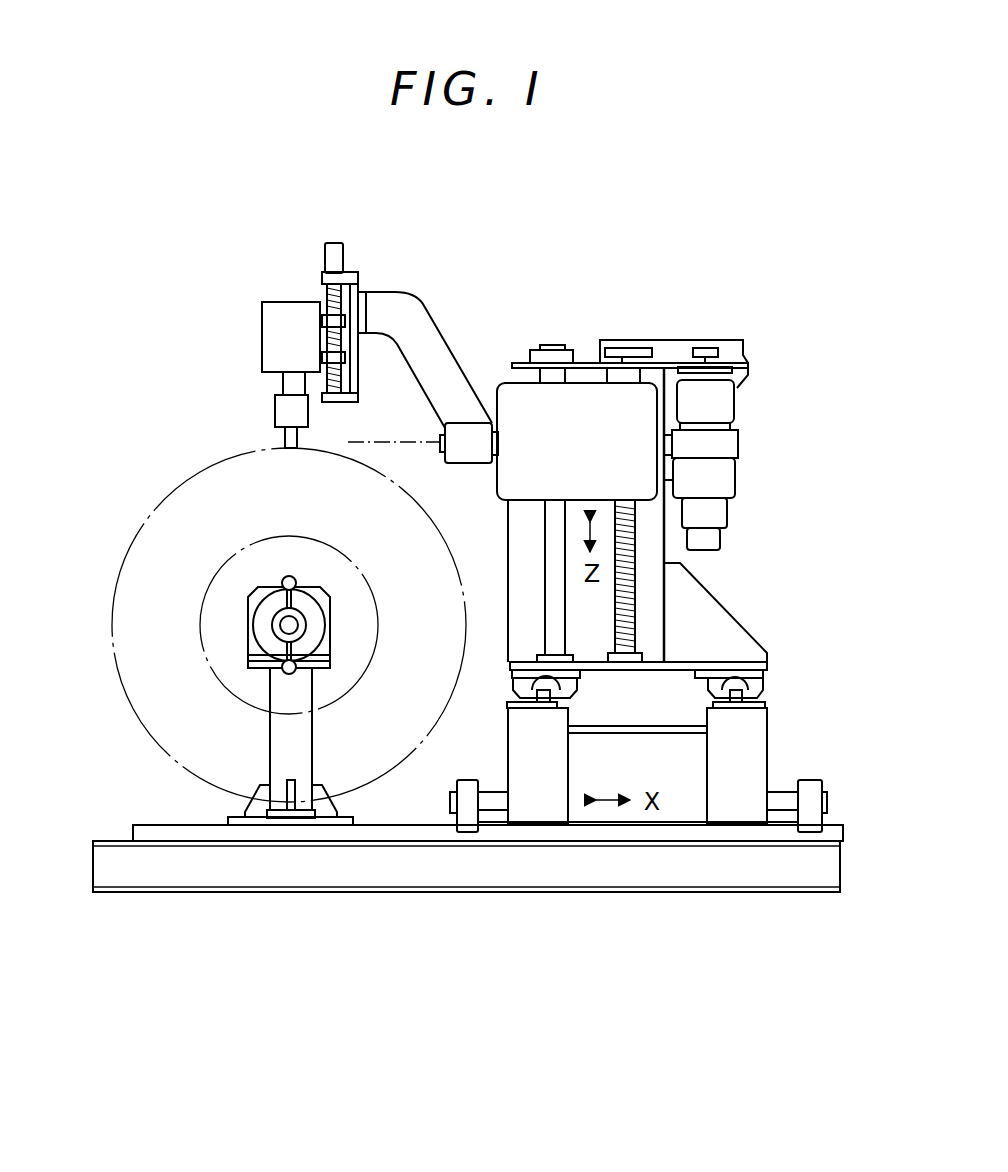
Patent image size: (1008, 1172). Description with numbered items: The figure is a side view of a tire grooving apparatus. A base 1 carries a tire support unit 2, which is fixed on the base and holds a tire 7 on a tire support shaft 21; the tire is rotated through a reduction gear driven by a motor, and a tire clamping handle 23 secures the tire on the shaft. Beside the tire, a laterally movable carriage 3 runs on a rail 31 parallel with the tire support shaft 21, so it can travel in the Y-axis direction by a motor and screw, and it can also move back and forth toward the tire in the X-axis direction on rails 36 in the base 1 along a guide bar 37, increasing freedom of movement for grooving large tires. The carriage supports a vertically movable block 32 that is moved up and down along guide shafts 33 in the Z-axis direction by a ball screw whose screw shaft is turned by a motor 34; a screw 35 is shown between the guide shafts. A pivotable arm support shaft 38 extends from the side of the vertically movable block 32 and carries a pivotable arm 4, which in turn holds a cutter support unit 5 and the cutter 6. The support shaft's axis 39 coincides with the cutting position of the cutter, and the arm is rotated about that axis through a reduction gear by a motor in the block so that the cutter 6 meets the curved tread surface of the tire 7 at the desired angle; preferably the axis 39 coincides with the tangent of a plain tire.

The base 1 is at (446, 906).
The tire support unit 2 is at (239, 734).
The laterally movable carriage 3 is at (801, 599).
The pivotable arm 4 is at (422, 304).
The cutter support unit 5 is at (265, 293).
The cutter 6 is at (282, 438).
The tire 7 is at (190, 476).
The tire support shaft 21 is at (265, 640).
The tire clamping handle 23 is at (282, 578).
The rail 31 is at (767, 682).
The vertically movable block 32 is at (578, 390).
The guide shafts 33 is at (555, 567).
The motor 34 is at (738, 448).
The feed screw 35 is at (615, 585).
The rails 36 is at (793, 822).
The guide bar 37 is at (780, 792).
The pivotable arm support shaft 38 is at (437, 463).
The axis 39 is at (352, 442).